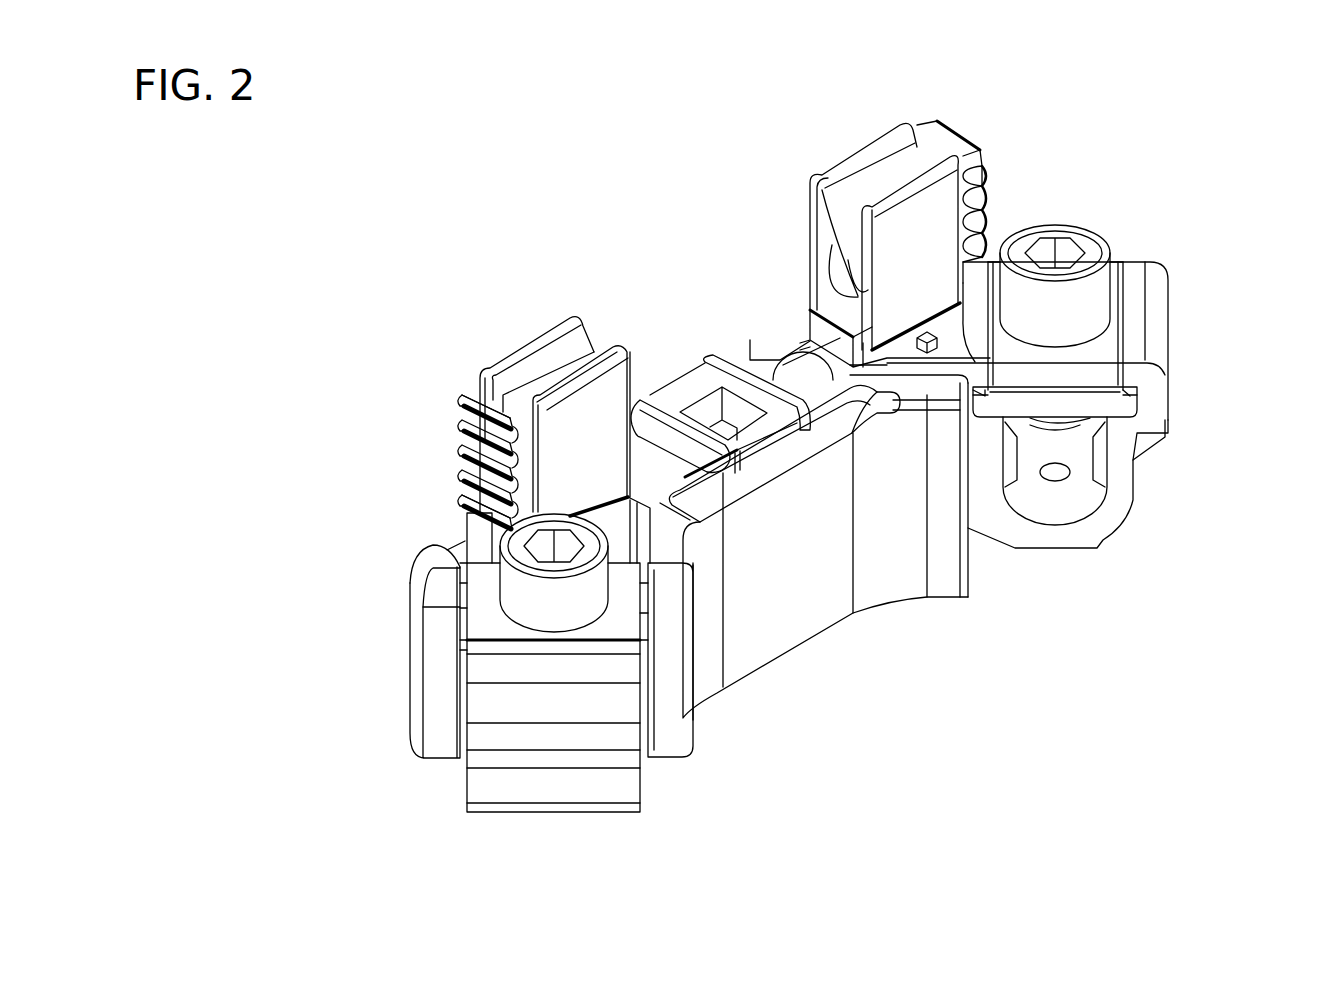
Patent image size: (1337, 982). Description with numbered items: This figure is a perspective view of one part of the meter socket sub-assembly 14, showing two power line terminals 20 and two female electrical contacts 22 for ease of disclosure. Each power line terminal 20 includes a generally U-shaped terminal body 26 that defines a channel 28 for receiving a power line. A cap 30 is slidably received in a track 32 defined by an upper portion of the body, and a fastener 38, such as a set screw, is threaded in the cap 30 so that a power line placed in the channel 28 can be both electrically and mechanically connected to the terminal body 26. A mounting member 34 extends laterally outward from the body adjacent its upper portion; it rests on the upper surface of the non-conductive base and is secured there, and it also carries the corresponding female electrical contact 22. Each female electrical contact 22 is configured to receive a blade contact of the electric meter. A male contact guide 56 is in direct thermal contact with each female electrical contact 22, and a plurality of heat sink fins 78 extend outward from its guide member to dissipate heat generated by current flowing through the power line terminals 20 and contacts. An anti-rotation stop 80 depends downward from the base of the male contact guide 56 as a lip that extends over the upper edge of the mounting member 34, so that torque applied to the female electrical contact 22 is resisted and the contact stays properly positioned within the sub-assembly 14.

The meter socket sub-assembly 14 is at (1120, 102).
The power line terminal 20 is at (462, 798).
The female electrical contact 22 is at (507, 336).
The terminal body 26 is at (778, 603).
The channel 28 is at (1067, 497).
The cap 30 is at (1067, 420).
The track 32 is at (1067, 417).
The mounting member 34 is at (480, 540).
The fastener 38 is at (522, 604).
The male contact guide 56 is at (455, 438).
The heat sink fins 78 is at (462, 408).
The anti-rotation stop 80 is at (813, 338).